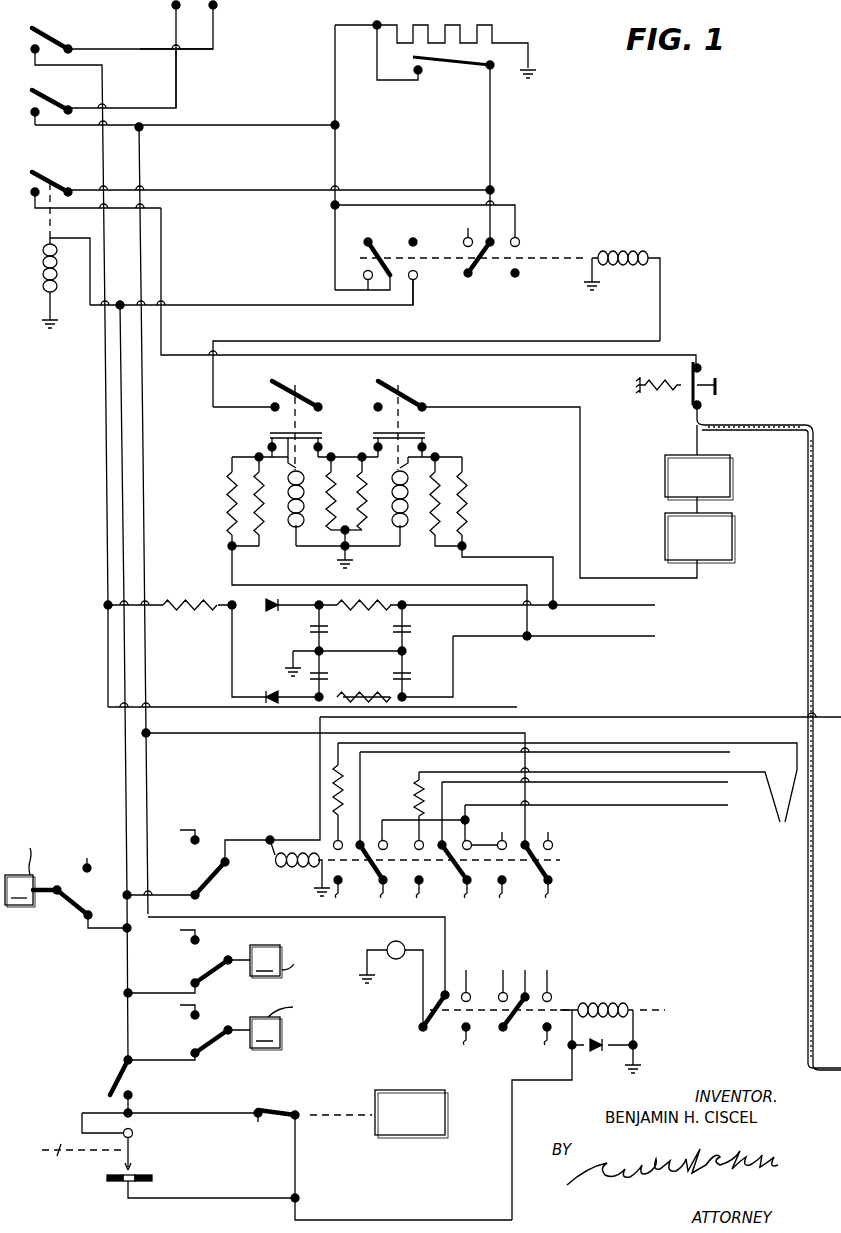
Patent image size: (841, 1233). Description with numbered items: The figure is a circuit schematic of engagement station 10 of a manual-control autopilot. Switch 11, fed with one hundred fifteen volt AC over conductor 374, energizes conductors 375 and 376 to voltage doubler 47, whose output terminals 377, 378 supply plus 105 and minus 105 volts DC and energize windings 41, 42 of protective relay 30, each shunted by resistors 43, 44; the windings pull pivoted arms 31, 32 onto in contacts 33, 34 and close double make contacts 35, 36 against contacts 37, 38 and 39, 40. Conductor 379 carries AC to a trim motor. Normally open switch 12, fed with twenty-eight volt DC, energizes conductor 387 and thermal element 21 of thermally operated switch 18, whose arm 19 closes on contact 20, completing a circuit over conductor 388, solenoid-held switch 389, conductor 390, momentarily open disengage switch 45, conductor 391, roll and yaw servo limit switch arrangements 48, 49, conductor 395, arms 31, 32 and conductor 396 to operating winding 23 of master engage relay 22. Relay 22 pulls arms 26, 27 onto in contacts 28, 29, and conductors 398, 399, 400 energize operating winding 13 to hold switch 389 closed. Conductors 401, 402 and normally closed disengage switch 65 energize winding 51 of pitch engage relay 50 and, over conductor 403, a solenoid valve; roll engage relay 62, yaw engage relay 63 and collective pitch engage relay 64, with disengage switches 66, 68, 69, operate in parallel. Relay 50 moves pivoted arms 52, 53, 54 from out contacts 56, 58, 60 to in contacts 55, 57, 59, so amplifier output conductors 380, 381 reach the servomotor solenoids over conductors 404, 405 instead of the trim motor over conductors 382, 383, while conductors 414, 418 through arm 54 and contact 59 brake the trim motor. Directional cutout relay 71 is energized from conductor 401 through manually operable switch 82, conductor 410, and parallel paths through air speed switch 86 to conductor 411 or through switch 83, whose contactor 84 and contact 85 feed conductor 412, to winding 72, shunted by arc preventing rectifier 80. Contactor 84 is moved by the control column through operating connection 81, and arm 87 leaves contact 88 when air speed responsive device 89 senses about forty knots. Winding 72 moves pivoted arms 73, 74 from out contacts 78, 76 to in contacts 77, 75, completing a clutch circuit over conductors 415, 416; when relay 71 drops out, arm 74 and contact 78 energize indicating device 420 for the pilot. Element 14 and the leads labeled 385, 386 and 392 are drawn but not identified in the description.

The engagement station 10 is at (279, 80).
The single pole single throw switch 11 is at (59, 24).
The normally open single pole single throw switch 12 is at (59, 86).
The operating winding 13 is at (42, 292).
The relay coil 14 is at (28, 251).
The thermally operated switch 18 is at (434, 85).
The operable arm 19 is at (450, 65).
The normally disengaged contact 20 is at (414, 68).
The thermal element 21 is at (462, 26).
The master engage relay 22 is at (613, 196).
The operating winding 23 is at (664, 260).
The relay arm 26 is at (480, 272).
The relay arm 27 is at (372, 242).
The in contact 28 is at (518, 273).
The in contact 29 is at (414, 242).
The protective relay 30 is at (470, 486).
The pivoted relay arm 31 is at (400, 388).
The pivoted relay arm 32 is at (295, 388).
The in contact 33 is at (375, 404).
The in contact 34 is at (270, 404).
The double make relay contact 35 is at (424, 438).
The double make contact 36 is at (273, 434).
The contact 37 is at (426, 449).
The contact 38 is at (376, 449).
The contact 39 is at (270, 447).
The contact 40 is at (320, 444).
The operating winding 41 is at (402, 528).
The operating winding 42 is at (291, 528).
The resistor 43 is at (363, 512).
The resistor 44 is at (331, 512).
The disengage switch 45 is at (709, 361).
The voltage doubler 47 is at (213, 636).
The servo limit switch arrangement 48 is at (665, 461).
The servo limit switch arrangement 49 is at (665, 525).
The pitch attitude control channel engage relay 50 is at (298, 830).
The operating winding 51 is at (301, 870).
The pivoted arm 52 is at (375, 870).
The pivoted arm 53 is at (458, 870).
The pivoted arm 54 is at (541, 870).
The in contact 55 is at (338, 829).
The out contact 56 is at (385, 879).
The in contact 57 is at (420, 879).
The out contact 58 is at (477, 879).
The in contact 59 is at (505, 874).
The out contact 60 is at (552, 874).
The roll attitude engage relay 62 is at (287, 951).
The yaw attitude engage relay 63 is at (293, 1024).
The collective pitch engage relay 64 is at (52, 841).
The disengage switch 65 is at (214, 870).
The disengage switch 66 is at (209, 970).
The disengage switch 68 is at (213, 1040).
The disengage switch 69 is at (67, 909).
The directional cutout relay 71 is at (554, 984).
The operable winding 72 is at (632, 1006).
The pivoted arm 73 is at (516, 1022).
The pivoted arm 74 is at (432, 1022).
The in contact 75 is at (553, 1017).
The out contact 76 is at (505, 1017).
The in contact 77 is at (470, 1029).
The out contact 78 is at (423, 1031).
The arc preventing device 80 is at (605, 1051).
The operating connection 81 is at (62, 1138).
The manually operable switch 82 is at (82, 1075).
The switch 83 is at (145, 1166).
The contactor 84 is at (131, 1133).
The contact 85 is at (125, 1188).
The switch 86 is at (288, 1101).
The operating arm 87 is at (270, 1110).
The contact 88 is at (258, 1122).
The air speed responsive device 89 is at (428, 1091).
The voltage supply lines 105 is at (683, 620).
The conductor 374 is at (219, 48).
The conductor 375 is at (108, 86).
The conductor 376 is at (162, 603).
The output terminal 377 is at (572, 604).
The output terminal 378 is at (572, 638).
The conductor 379 is at (193, 735).
The output conductor 380 is at (538, 760).
The output conductor 381 is at (596, 787).
The conductor 382 is at (398, 818).
The conductor 383 is at (590, 808).
The DC supply lead 385 is at (178, 83).
The lead 386 is at (42, 126).
The conductor 387 is at (230, 128).
The conductor 388 is at (492, 140).
The solenoid held switch 389 is at (54, 178).
The conductor 390 is at (163, 255).
The conductor 391 is at (705, 418).
The lead 392 is at (701, 442).
The conductor 395 is at (517, 406).
The conductor 396 is at (422, 344).
The conductor 398 is at (518, 222).
The conductor 399 is at (335, 264).
The conductor 400 is at (246, 304).
The conductor 401 is at (123, 468).
The conductor 402 is at (170, 893).
The conductor 403 is at (316, 787).
The conductor 404 is at (567, 743).
The conductor 405 is at (659, 772).
The conductor 410 is at (133, 1100).
The conductor 411 is at (394, 1220).
The conductor 412 is at (186, 1198).
The conductor 414 is at (142, 172).
The conductor 415 is at (215, 918).
The conductor 416 is at (466, 973).
The conductor 418 is at (238, 745).
The indicating device 420 is at (400, 948).